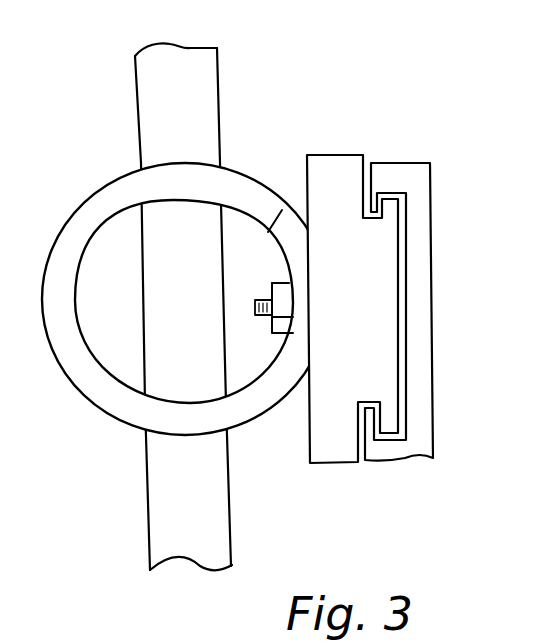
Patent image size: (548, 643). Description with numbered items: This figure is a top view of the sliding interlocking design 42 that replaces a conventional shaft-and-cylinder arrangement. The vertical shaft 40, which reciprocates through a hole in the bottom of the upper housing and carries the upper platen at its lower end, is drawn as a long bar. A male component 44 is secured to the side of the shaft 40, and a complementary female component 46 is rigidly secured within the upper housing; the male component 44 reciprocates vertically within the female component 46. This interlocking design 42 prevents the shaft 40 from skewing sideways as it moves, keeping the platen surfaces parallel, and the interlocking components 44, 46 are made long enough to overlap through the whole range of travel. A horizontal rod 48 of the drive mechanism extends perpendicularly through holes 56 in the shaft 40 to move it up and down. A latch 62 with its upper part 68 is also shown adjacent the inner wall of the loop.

The shaft 40 is at (105, 182).
The sliding interlocking design 42 is at (412, 195).
The male component 44 is at (323, 150).
The female component 46 is at (400, 158).
The horizontal rod 48 is at (218, 85).
The holes 56 is at (223, 167).
The latch 62 is at (259, 316).
The latch top 68 is at (280, 279).